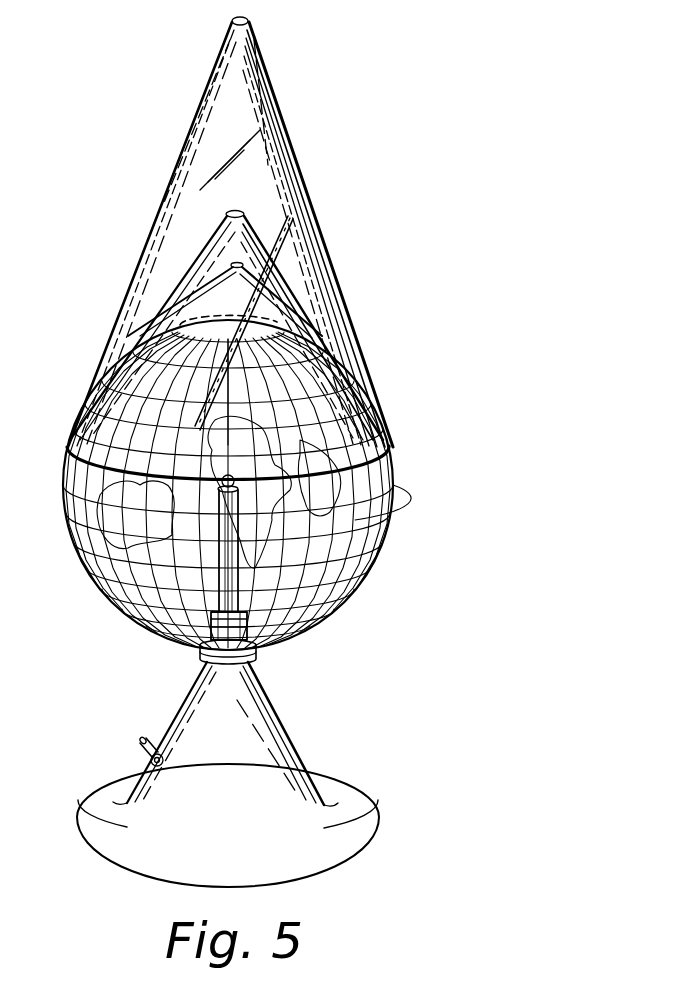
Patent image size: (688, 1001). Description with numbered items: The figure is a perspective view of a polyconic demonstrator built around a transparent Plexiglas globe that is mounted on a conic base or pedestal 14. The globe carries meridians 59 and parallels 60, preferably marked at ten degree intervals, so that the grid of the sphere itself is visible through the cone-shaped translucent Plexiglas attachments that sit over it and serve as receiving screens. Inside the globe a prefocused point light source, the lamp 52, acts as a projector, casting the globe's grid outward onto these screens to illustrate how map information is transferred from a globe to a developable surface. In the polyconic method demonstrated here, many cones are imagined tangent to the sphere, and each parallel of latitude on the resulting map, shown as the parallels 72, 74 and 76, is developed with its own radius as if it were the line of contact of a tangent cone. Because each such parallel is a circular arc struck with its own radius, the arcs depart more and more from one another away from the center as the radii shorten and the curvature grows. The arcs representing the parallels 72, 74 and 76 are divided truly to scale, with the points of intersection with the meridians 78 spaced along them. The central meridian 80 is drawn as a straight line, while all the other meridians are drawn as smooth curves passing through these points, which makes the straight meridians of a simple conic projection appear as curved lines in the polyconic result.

The conic base or pedestal 14 is at (224, 780).
The lamp 52 is at (218, 492).
The meridians 59 is at (349, 597).
The parallels 60 is at (387, 506).
The parallel of latitude 72 is at (247, 392).
The parallel of latitude 74 is at (365, 380).
The parallel of latitude 76 is at (378, 420).
The meridians 78 is at (67, 450).
The central meridian 80 is at (237, 331).